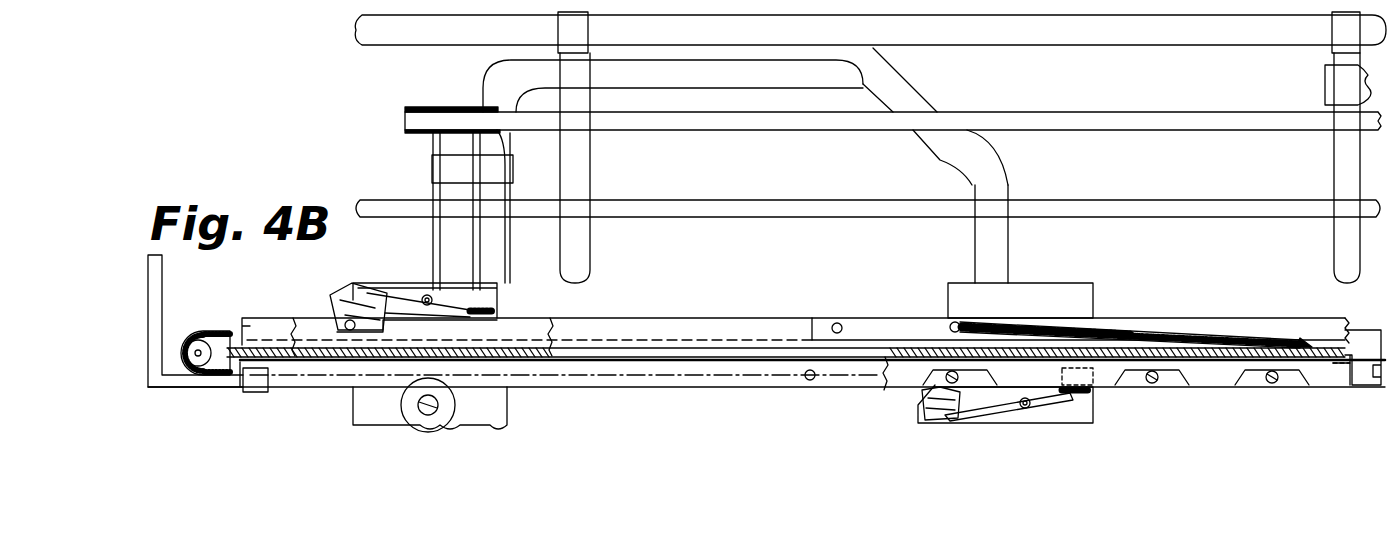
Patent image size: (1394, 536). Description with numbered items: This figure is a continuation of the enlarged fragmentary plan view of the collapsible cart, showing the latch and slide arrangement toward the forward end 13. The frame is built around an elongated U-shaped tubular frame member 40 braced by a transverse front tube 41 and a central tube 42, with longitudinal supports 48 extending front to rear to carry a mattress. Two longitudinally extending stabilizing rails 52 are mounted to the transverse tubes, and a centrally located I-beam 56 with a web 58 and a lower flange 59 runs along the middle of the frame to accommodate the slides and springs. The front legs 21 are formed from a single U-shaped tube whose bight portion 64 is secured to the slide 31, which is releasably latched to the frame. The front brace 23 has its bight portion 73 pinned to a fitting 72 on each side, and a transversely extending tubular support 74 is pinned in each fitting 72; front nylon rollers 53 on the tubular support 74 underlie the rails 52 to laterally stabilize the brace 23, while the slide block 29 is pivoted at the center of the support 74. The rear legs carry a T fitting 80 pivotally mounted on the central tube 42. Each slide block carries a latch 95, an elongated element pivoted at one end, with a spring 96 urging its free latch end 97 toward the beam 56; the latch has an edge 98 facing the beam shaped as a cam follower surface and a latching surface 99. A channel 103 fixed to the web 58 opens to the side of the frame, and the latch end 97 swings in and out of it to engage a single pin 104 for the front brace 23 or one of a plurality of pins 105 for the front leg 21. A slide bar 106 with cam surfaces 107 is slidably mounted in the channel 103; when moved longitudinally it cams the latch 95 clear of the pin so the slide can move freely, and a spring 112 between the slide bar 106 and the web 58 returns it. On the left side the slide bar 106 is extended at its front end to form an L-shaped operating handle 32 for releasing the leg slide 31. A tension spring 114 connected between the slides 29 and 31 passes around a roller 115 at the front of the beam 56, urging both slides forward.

The forward end 13 is at (332, 156).
The front legs 21 is at (805, 53).
The brace 23 is at (673, 86).
The slide block 29 is at (490, 279).
The slide 31 is at (1100, 283).
The operating handle 32 is at (152, 308).
The tubular frame member 40 is at (1160, 27).
The transverse front tube 41 is at (585, 170).
The central tube 42 is at (1340, 170).
The longitudinal supports 48 is at (803, 214).
The stabilizing rails 52 is at (1122, 127).
The front nylon rollers 53 is at (412, 108).
The I-beam 56 is at (1373, 388).
The web 58 is at (237, 340).
The lower flange 59 is at (1362, 328).
The bight portion 64 is at (1009, 242).
The fitting 72 is at (472, 169).
The bight portion 73 is at (497, 226).
The tubular support 74 is at (446, 235).
The T fitting 80 is at (1345, 82).
The latch 95 is at (338, 284).
The spring 96 is at (403, 297).
The latch end 97 is at (343, 312).
The edge 98 is at (377, 290).
The latching surface 99 is at (343, 318).
The channel 103 is at (552, 350).
The pin 104 is at (323, 323).
The pins 105 is at (958, 372).
The slide bar 106 is at (303, 383).
The cam surfaces 107 is at (397, 326).
The spring 112 is at (1117, 332).
The tension spring 114 is at (213, 333).
The roller 115 is at (198, 357).